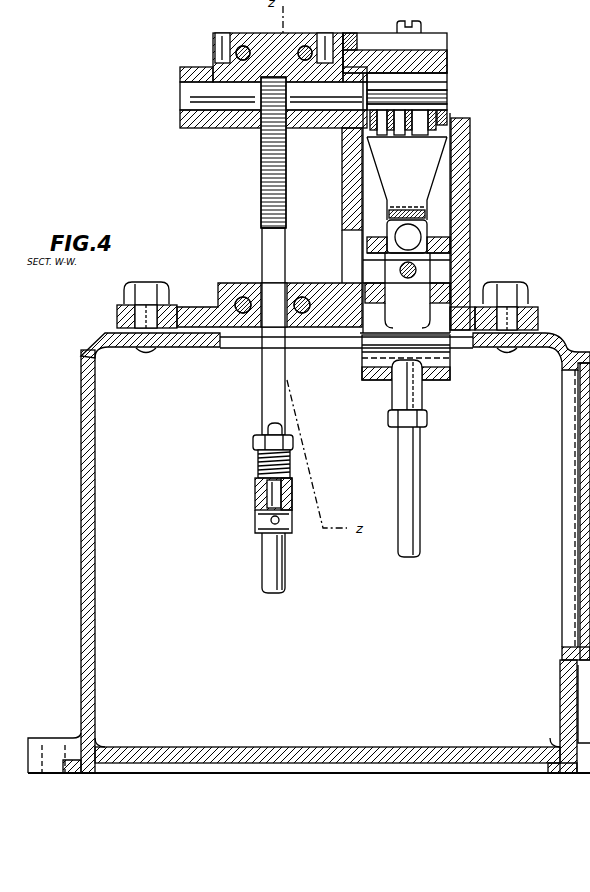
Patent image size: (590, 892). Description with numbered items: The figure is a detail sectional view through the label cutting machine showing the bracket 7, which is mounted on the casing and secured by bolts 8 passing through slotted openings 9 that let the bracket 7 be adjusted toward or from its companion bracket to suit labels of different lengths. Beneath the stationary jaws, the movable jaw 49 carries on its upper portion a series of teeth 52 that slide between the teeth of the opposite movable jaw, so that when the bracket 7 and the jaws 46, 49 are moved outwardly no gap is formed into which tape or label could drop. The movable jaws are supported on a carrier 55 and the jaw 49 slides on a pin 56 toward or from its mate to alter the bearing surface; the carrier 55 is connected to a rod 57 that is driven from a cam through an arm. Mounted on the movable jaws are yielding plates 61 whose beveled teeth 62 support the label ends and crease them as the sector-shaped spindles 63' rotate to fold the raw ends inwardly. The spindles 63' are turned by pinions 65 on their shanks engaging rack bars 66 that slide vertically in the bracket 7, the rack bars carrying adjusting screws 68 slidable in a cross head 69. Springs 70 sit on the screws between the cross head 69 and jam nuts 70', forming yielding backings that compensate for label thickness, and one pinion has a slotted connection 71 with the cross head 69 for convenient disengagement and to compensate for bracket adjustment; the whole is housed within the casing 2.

The housing 2 is at (83, 366).
The bracket 7 is at (303, 35).
The bolts 8 is at (147, 283).
The slotted openings 9 is at (118, 308).
The jaw 46 is at (442, 80).
The movable jaw 49 is at (437, 200).
The teeth 52 is at (443, 127).
The carrier 55 is at (375, 347).
The pin 56 is at (410, 230).
The rod 57 is at (405, 474).
The plates 61 is at (407, 188).
The beveled teeth 62 is at (440, 115).
The spindles 63' is at (431, 97).
The pinions 65 is at (270, 97).
The rack bars 66 is at (262, 164).
The adjusting screws 68 is at (270, 490).
The cross head 69 is at (287, 497).
The springs 70 is at (252, 464).
The jam nuts 70' is at (255, 441).
The slotted connection 71 is at (256, 503).